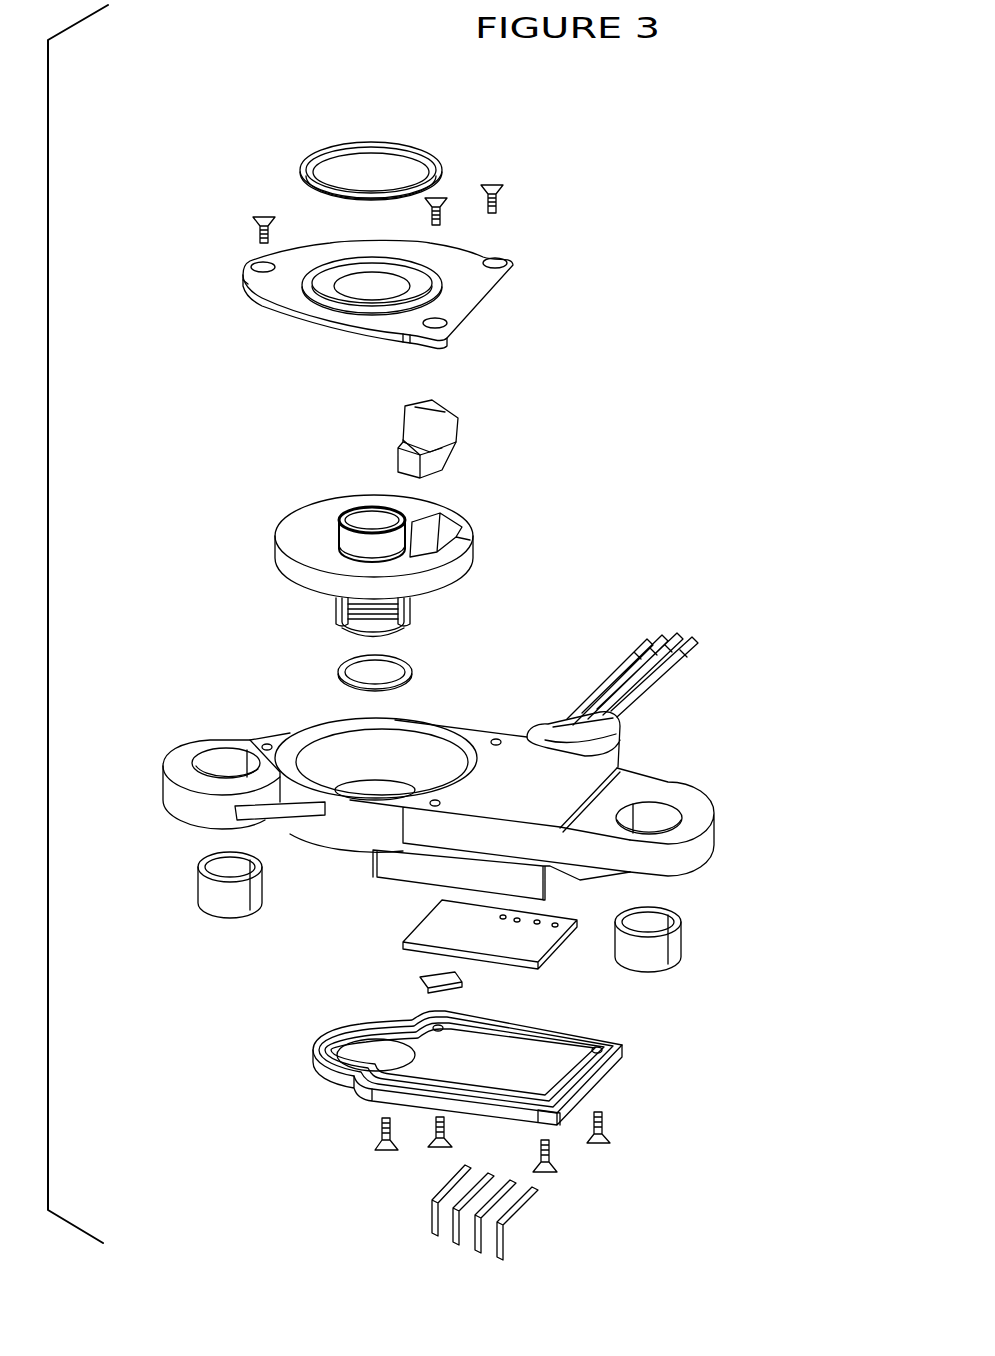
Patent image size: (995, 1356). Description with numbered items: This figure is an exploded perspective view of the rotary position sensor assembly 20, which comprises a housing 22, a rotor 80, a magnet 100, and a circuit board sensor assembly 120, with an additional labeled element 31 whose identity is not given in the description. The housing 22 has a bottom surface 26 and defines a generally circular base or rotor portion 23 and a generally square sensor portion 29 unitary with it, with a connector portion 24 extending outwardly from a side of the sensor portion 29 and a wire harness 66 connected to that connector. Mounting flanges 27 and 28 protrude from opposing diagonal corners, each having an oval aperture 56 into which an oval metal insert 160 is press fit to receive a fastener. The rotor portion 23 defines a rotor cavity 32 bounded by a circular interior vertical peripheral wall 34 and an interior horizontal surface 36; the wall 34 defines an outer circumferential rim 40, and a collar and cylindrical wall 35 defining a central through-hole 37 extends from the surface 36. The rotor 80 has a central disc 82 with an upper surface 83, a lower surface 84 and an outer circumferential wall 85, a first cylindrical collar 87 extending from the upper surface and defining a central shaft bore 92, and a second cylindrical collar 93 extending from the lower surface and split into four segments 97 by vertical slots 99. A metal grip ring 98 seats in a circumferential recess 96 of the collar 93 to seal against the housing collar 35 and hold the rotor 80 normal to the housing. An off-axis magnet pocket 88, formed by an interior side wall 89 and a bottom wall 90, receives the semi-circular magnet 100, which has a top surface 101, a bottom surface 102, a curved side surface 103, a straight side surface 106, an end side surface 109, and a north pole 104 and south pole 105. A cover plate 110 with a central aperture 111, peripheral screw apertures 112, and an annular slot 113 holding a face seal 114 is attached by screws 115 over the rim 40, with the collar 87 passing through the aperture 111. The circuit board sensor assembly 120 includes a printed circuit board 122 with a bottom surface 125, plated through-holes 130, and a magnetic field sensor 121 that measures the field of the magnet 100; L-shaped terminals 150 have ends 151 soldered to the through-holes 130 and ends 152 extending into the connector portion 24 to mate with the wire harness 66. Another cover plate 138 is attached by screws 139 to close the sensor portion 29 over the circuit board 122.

The rotary position sensor assembly 20 is at (280, 104).
The housing 22 is at (449, 754).
The base or rotor portion 23 is at (310, 826).
The connector portion 24 is at (553, 727).
The bottom surface 26 is at (525, 762).
The mounting flange or bracket 27 is at (700, 800).
The mounting flange or bracket 28 is at (168, 796).
The sensor portion 29 is at (575, 875).
The sensor electronics 31 is at (245, 965).
The rotor cavity 32 is at (325, 748).
The interior vertical peripheral wall 34 is at (365, 740).
The collar and cylindrical wall 35 is at (352, 857).
The interior horizontal wall or surface 36 is at (300, 740).
The central bore or through-hole 37 is at (367, 793).
The outer peripheral circumferential rim 40 is at (413, 720).
The oval-shaped apertures or through-holes 56 is at (220, 755).
The wire harness 66 is at (682, 678).
The rotor 80 is at (365, 511).
The central plate or disc 82 is at (275, 528).
The upper horizontal surface 83 is at (302, 520).
The lower horizontal surface 84 is at (317, 590).
The outer circumferential vertical surface or wall 85 is at (440, 580).
The first cylindrical collar 87 is at (318, 505).
The magnet recess or pocket 88 is at (450, 540).
The interior side wall 89 is at (430, 520).
The bottom wall 90 is at (455, 560).
The central shaft bore or through-hole 92 is at (364, 520).
The second cylindrical collar 93 is at (370, 622).
The circumferential recess 96 is at (338, 608).
The sections or segments 97 is at (406, 615).
The metal grip ring 98 is at (408, 668).
The elongate vertical slots 99 is at (383, 633).
The magnet 100 is at (490, 417).
The top horizontal surface 101 is at (430, 410).
The bottom horizontal surface 102 is at (412, 486).
The curved semi-circular side vertical surface 103 is at (458, 452).
The north pole 104 is at (455, 420).
The south pole 105 is at (405, 432).
The straight vertical side surface 106 is at (407, 420).
The end side vertical surface 109 is at (400, 450).
The cover plate 110 is at (373, 241).
The central aperture 111 is at (360, 280).
The peripheral screw apertures 112 is at (497, 262).
The annular slot or recess 113 is at (268, 305).
The ring or face seal 114 is at (374, 143).
The fasteners or screws 115 is at (503, 198).
The circuit board sensor assembly 120 is at (516, 957).
The sensor 121 is at (460, 982).
The printed circuit board 122 is at (560, 950).
The bottom surface 125 is at (427, 932).
The plated through-holes 130 is at (503, 917).
The cover plate 138 is at (600, 1055).
The fasteners or screws 139 is at (552, 1152).
The terminals 150 is at (492, 1228).
The terminal ends 151 is at (507, 1242).
The terminal ends 152 is at (507, 1210).
The oval-shaped closed metal inserts 160 is at (200, 888).